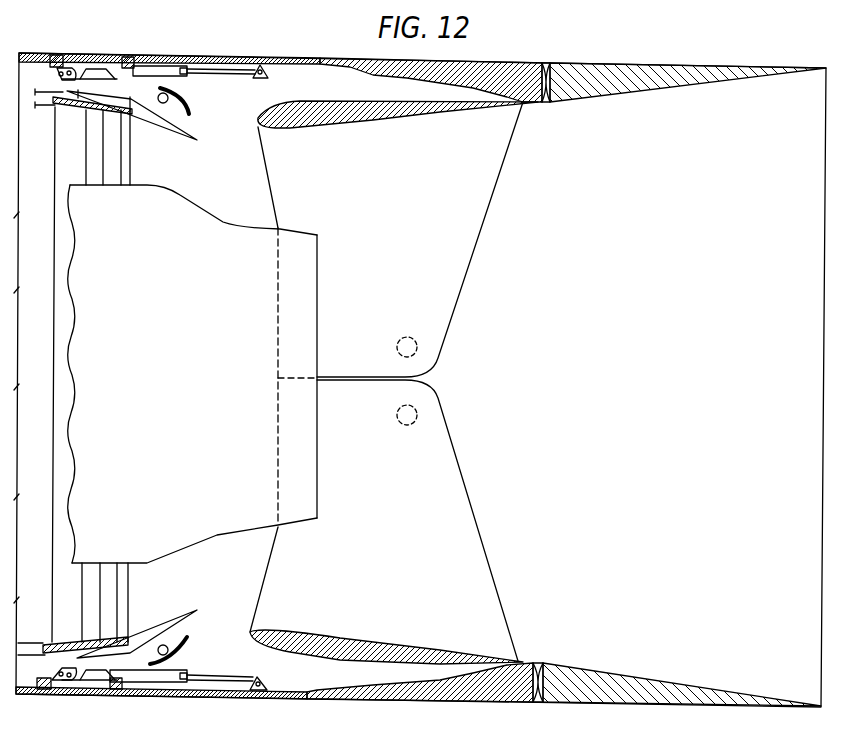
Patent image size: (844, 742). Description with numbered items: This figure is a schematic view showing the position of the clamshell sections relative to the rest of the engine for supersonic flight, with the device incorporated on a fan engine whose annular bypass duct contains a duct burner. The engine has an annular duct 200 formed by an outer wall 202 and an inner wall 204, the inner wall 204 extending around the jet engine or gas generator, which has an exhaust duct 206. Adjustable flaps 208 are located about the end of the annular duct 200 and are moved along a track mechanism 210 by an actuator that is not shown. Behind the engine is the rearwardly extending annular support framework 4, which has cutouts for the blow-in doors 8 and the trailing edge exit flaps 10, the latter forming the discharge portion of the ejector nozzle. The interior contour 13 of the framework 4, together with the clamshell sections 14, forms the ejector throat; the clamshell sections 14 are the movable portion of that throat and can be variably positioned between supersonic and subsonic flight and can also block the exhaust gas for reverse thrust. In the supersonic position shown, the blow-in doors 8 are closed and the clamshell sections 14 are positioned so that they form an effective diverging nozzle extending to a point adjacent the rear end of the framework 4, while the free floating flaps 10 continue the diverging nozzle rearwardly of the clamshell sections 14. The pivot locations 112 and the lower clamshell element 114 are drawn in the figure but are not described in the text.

The support framework 4 is at (500, 46).
The blow-in doors 8 is at (204, 53).
The trailing edge exit flaps 10 is at (638, 72).
The interior contour 13 is at (407, 77).
The clamshell sections 14 is at (472, 195).
The pivot 112 is at (417, 343).
The lower vane 114 is at (472, 582).
The annular duct 200 is at (72, 128).
The outer wall 202 is at (115, 112).
The inner wall 204 is at (173, 192).
The exhaust duct 206 is at (317, 246).
The adjustable flaps 208 is at (185, 121).
The track mechanism 210 is at (172, 97).